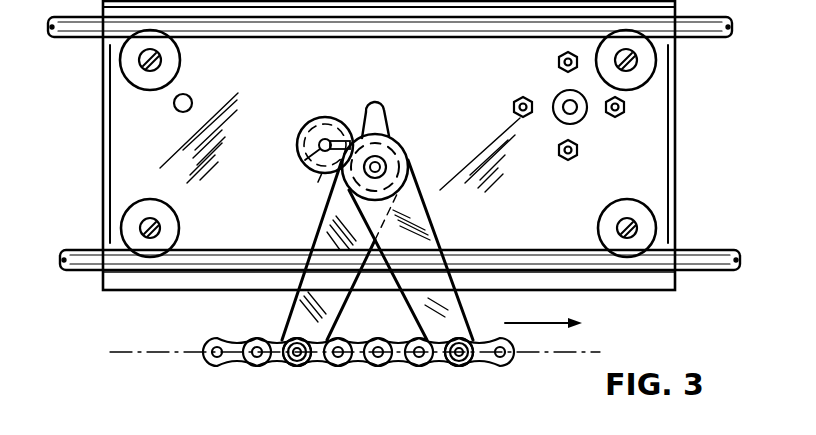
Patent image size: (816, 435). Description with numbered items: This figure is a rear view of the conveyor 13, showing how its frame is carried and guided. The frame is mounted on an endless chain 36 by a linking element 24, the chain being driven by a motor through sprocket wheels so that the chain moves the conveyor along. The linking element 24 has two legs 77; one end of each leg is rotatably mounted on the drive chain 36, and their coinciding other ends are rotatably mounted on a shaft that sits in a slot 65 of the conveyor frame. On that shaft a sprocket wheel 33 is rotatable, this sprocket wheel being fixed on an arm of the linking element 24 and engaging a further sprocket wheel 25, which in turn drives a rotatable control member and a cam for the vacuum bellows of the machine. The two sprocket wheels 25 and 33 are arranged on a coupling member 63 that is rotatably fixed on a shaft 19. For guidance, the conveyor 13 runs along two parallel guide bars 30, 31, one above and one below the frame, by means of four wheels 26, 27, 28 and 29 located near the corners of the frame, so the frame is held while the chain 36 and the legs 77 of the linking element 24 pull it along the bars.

The conveyor 13 is at (416, 74).
The shaft 19 is at (312, 131).
The linking element 24 is at (452, 228).
The sprocket wheel 25 is at (337, 120).
The wheel 26 is at (136, 226).
The wheel 27 is at (124, 69).
The wheel 28 is at (640, 66).
The wheel 29 is at (640, 227).
The guide bar 30 is at (722, 40).
The guide bar 31 is at (708, 262).
The sprocket wheel 33 is at (410, 164).
The endless chain 36 is at (221, 343).
The coupling member 63 is at (318, 182).
The slot 65 is at (394, 120).
The legs 77 is at (369, 250).